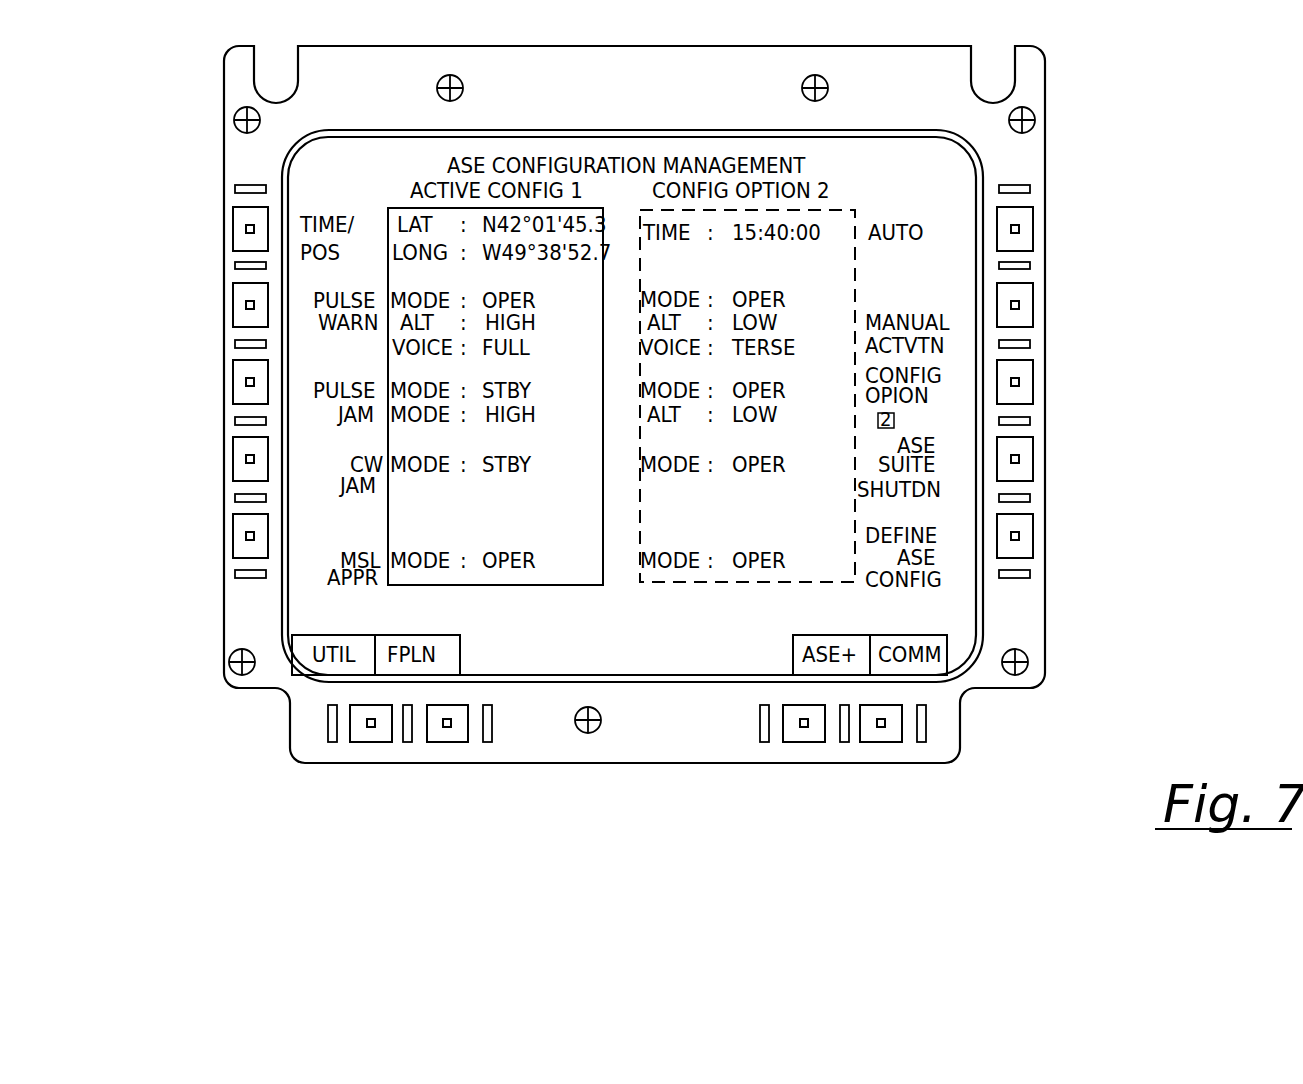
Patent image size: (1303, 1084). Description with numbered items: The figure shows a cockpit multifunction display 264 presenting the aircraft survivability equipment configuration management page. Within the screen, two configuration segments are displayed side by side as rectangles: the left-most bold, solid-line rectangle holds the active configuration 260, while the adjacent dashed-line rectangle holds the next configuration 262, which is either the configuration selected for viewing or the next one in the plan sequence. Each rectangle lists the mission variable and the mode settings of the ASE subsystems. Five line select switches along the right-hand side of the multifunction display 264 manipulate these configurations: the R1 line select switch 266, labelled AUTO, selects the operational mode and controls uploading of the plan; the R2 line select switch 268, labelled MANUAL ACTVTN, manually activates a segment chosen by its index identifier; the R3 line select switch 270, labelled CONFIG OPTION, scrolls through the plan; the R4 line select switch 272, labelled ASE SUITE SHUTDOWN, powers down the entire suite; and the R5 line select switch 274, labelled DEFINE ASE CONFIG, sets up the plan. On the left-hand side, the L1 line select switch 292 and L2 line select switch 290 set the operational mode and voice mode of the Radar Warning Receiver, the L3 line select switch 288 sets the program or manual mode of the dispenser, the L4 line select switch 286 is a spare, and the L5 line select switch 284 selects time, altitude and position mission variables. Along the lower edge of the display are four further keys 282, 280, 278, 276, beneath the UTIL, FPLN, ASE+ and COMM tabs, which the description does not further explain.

The active configuration 260 is at (525, 585).
The next configuration 262 is at (663, 582).
The multifunction display 264 is at (1045, 167).
The R1 line select switch 266 is at (1028, 240).
The R2 line select switch 268 is at (1025, 307).
The R3 line select switch 270 is at (1025, 385).
The R4 line select switch 272 is at (1025, 463).
The R5 line select switch 274 is at (1025, 543).
The bottom key 276 is at (881, 742).
The bottom key 278 is at (804, 742).
The bottom key 280 is at (447, 742).
The bottom key 282 is at (368, 742).
The L5 line select switch 284 is at (238, 545).
The L4 line select switch 286 is at (235, 467).
The L3 line select switch 288 is at (238, 390).
The L2 line select switch 290 is at (238, 305).
The L1 line select switch 292 is at (240, 243).